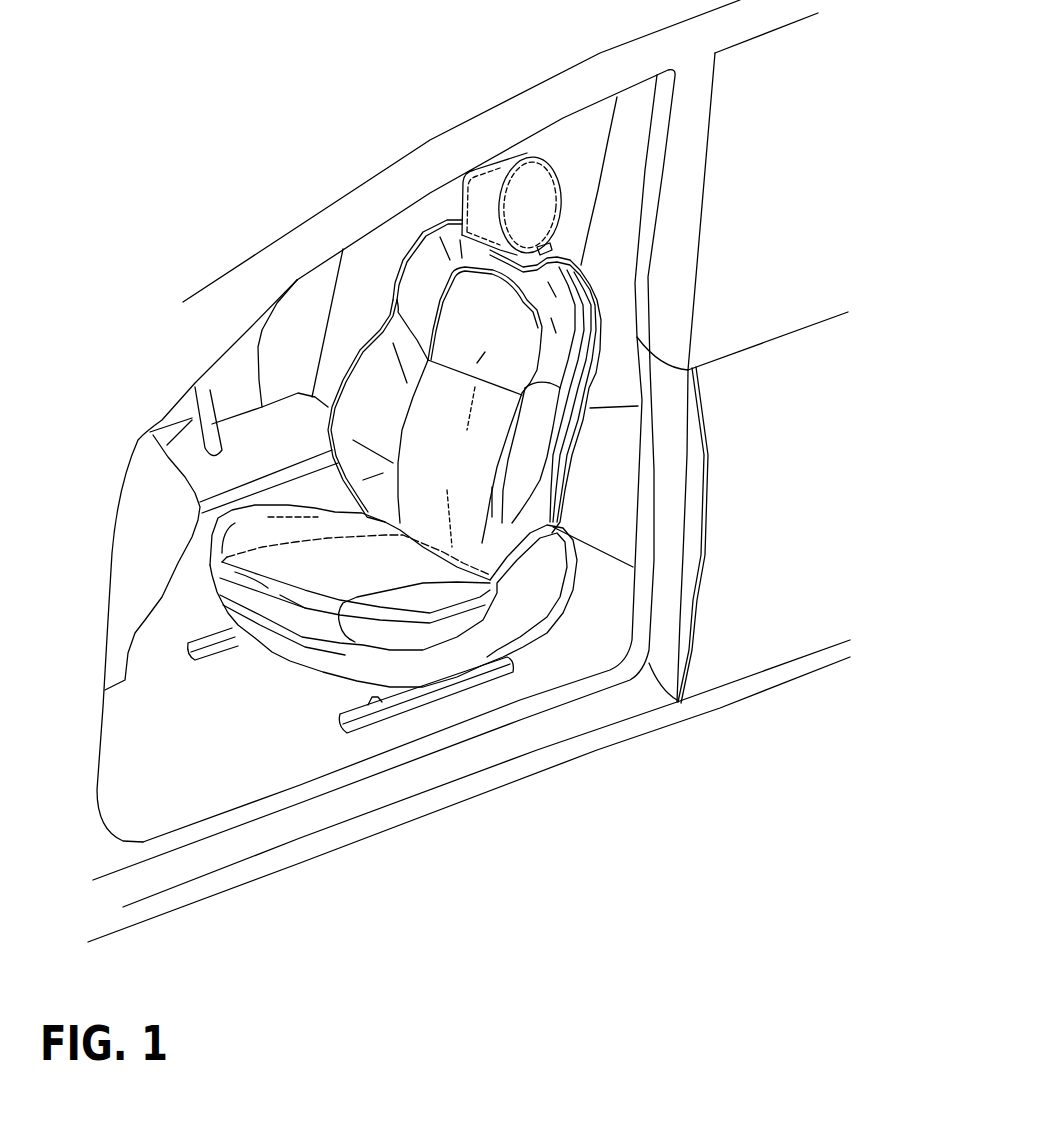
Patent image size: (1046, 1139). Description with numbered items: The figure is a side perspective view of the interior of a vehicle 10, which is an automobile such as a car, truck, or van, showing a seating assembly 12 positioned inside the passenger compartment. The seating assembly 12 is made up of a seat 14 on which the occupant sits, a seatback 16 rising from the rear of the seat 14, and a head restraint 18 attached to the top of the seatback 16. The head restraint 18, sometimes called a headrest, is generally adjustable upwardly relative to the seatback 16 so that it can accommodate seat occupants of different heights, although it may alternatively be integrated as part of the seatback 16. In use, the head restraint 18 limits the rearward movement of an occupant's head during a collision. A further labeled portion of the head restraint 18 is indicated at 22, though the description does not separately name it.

The vehicle 10 is at (361, 176).
The seating assembly 12 is at (380, 285).
The seat 14 is at (337, 595).
The seatback 16 is at (448, 428).
The head restraint 18 is at (503, 129).
The headrest rear portion 22 is at (486, 180).